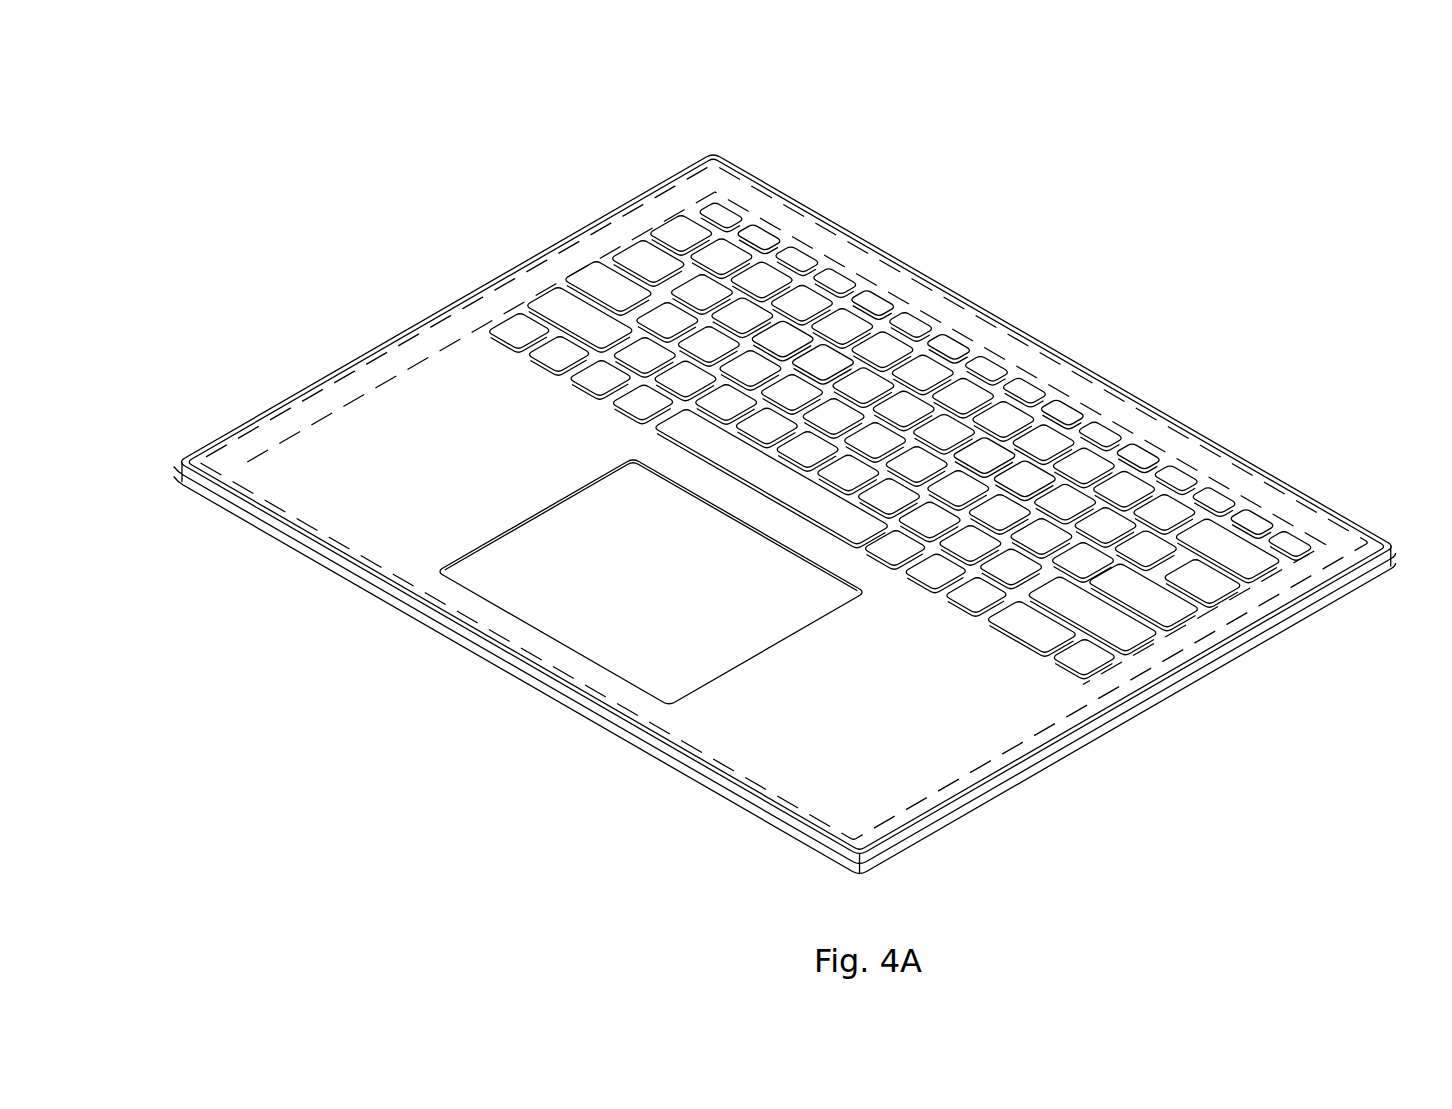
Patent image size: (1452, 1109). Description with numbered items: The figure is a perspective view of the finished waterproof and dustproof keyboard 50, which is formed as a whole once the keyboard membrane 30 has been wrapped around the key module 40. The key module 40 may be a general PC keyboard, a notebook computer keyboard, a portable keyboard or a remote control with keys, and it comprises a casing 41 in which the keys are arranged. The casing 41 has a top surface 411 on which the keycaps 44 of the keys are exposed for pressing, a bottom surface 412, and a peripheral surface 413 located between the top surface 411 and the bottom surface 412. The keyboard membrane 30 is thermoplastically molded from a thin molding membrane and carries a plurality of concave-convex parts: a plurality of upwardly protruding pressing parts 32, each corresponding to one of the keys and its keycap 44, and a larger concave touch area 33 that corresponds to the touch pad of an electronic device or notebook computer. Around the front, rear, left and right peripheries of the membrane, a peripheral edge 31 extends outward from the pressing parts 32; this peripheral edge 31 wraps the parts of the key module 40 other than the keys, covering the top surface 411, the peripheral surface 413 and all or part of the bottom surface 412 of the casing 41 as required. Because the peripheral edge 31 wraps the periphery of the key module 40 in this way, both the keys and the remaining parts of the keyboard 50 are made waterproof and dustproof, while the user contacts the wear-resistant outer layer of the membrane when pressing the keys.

The keyboard 50 is at (915, 200).
The keyboard membrane 30 is at (1148, 318).
The key module 40 is at (800, 760).
The casing 41 is at (392, 543).
The top surface 411 is at (260, 477).
The bottom surface 412 is at (800, 842).
The peripheral surface 413 is at (232, 508).
The peripheral edge 31 is at (990, 332).
The pressing part 32 is at (640, 262).
The touch area 33 is at (578, 620).
The keycap 44 is at (1175, 612).